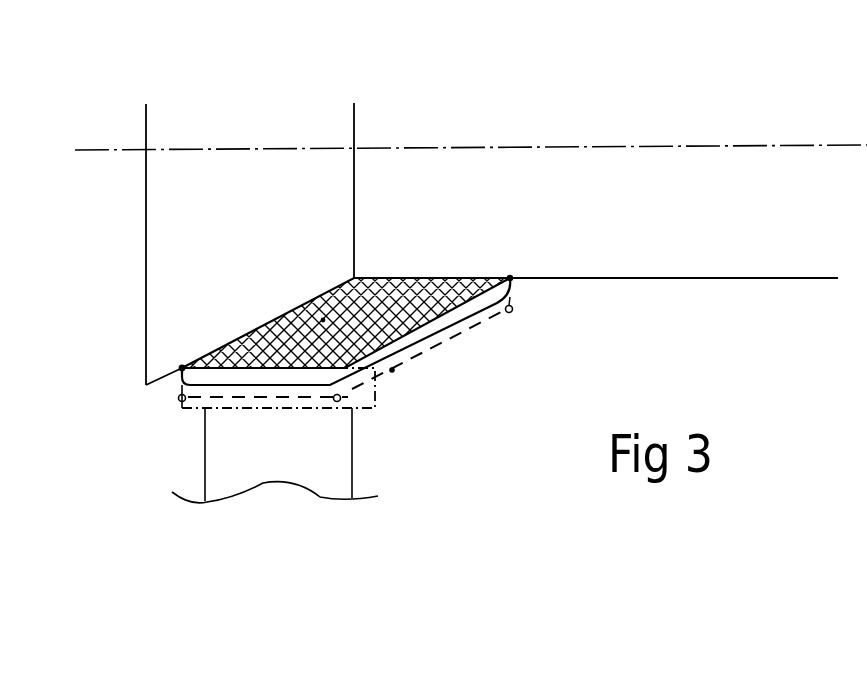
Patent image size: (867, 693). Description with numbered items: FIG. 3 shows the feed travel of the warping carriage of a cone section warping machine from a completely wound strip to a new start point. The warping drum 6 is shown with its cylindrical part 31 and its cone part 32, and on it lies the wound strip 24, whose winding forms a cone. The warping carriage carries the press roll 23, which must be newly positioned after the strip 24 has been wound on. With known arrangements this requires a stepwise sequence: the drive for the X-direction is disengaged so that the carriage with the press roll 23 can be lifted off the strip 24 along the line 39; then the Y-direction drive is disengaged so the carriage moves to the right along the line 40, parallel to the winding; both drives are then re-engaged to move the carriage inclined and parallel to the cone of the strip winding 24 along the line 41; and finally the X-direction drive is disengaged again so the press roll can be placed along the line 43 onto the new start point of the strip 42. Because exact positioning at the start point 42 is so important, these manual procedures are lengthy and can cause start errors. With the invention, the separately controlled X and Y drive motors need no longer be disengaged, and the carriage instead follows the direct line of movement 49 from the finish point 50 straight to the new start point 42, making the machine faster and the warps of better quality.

The warping drum 6 is at (285, 100).
The press roll 23 is at (197, 409).
The strip 24 is at (318, 301).
The cylindrical part 31 is at (400, 216).
The cone part 32 is at (193, 203).
The line 39 is at (181, 387).
The line 40 is at (264, 400).
The line 41 is at (392, 371).
The new start point of the strip 42 is at (510, 278).
The line 43 is at (510, 297).
The direct line of movement 49 is at (305, 384).
The finish point 50 is at (182, 368).